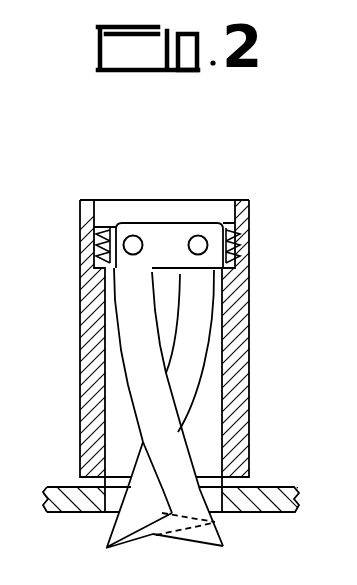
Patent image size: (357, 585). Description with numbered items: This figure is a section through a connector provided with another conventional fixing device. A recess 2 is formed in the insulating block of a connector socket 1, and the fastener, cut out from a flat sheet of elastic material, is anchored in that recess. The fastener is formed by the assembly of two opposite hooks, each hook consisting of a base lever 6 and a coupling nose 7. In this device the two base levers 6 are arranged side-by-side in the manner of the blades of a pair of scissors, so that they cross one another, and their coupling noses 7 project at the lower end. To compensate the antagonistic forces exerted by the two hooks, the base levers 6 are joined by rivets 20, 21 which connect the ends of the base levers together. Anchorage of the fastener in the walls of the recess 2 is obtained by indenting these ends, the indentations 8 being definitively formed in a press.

The connector socket 1 is at (239, 338).
The recess 2 is at (162, 211).
The base lever 6 is at (148, 407).
The coupling nose 7 is at (152, 526).
The indentations 8 is at (248, 240).
The rivet 20 is at (133, 235).
The rivet 21 is at (197, 235).